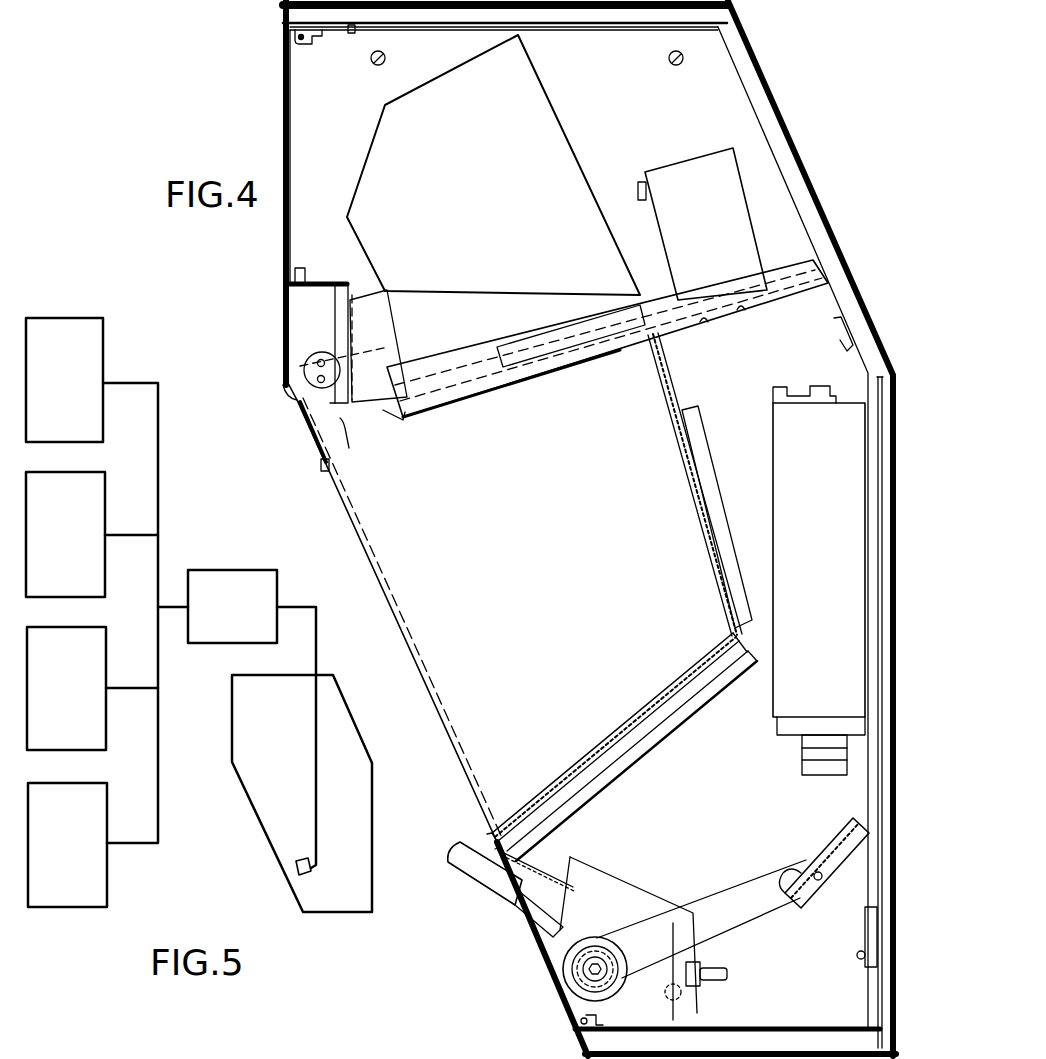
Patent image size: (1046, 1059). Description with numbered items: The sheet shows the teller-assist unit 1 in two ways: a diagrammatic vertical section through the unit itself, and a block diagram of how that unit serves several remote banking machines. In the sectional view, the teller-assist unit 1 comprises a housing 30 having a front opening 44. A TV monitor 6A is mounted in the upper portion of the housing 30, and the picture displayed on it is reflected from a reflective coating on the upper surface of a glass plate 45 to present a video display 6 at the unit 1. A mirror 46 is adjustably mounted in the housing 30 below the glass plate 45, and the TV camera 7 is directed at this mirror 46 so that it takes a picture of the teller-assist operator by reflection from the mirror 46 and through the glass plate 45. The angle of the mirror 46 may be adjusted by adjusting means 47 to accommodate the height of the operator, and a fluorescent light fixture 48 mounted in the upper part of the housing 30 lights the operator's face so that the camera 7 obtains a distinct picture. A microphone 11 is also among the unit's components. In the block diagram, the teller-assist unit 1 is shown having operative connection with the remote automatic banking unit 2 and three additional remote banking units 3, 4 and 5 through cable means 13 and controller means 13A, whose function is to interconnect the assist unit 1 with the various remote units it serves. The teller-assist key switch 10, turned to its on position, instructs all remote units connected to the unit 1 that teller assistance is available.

In FIG. 4, the teller-assist unit 1 is at (278, 91).
In FIG. 5, the teller-assist unit 1 is at (250, 811).
In FIG. 5, the remote automatic banking unit 2 is at (110, 351).
In FIG. 5, the remote banking unit 3 is at (110, 496).
In FIG. 5, the remote banking unit 4 is at (111, 655).
In FIG. 5, the remote banking unit 5 is at (112, 810).
In FIG. 4, the video display 6 is at (607, 737).
In FIG. 4, the TV monitor 6A is at (497, 223).
In FIG. 4, the video camera 7 is at (793, 657).
In FIG. 5, the teller-assist on-off key switch 10 is at (297, 869).
In FIG. 4, the microphone 11 is at (502, 890).
In FIG. 5, the cable means 13 is at (318, 652).
In FIG. 5, the controller means 13A is at (217, 572).
In FIG. 4, the housing 30 is at (861, 308).
In FIG. 4, the front opening 44 is at (362, 512).
In FIG. 4, the glass plate 45 is at (690, 671).
In FIG. 4, the mirror 46 is at (837, 838).
In FIG. 4, the adjusting means 47 is at (570, 983).
In FIG. 4, the fluorescent light fixture 48 is at (305, 363).